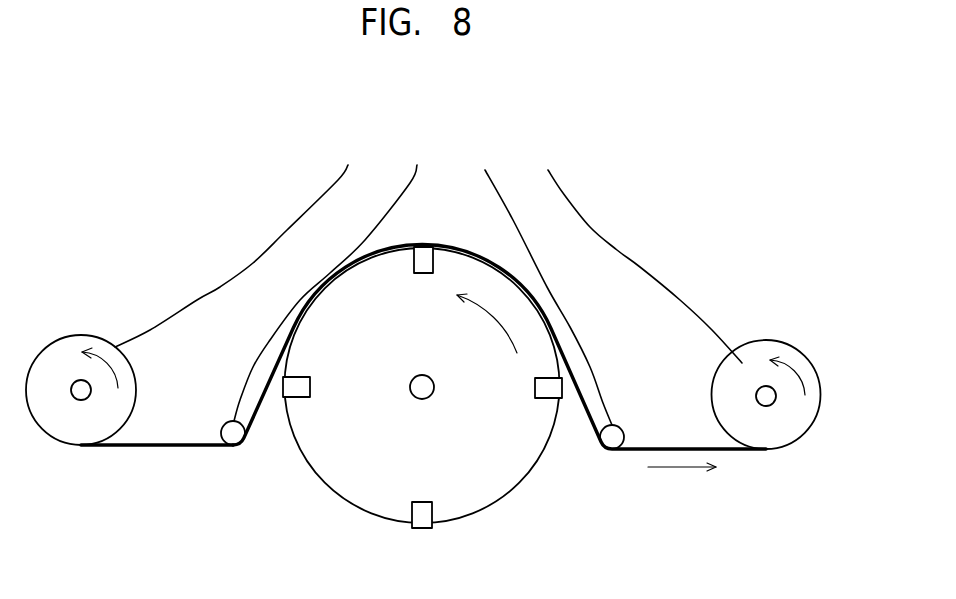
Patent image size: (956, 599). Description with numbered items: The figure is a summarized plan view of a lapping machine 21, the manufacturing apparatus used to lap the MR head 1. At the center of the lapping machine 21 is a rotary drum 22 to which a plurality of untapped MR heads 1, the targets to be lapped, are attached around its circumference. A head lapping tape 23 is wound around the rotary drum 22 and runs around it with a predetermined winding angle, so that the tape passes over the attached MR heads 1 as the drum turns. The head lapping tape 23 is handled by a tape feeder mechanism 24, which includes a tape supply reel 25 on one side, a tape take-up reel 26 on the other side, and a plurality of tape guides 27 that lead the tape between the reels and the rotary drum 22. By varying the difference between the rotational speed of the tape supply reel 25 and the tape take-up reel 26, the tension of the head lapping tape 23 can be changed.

The MR head 1 is at (423, 262).
The lapping machine 21 is at (250, 545).
The rotary drum 22 is at (358, 472).
The head lapping tape 23 is at (138, 447).
The tape feeder mechanism 24 is at (573, 137).
The tape supply reel 25 is at (241, 240).
The tape take-up reel 26 is at (637, 248).
The tape guide 27 is at (423, 279).